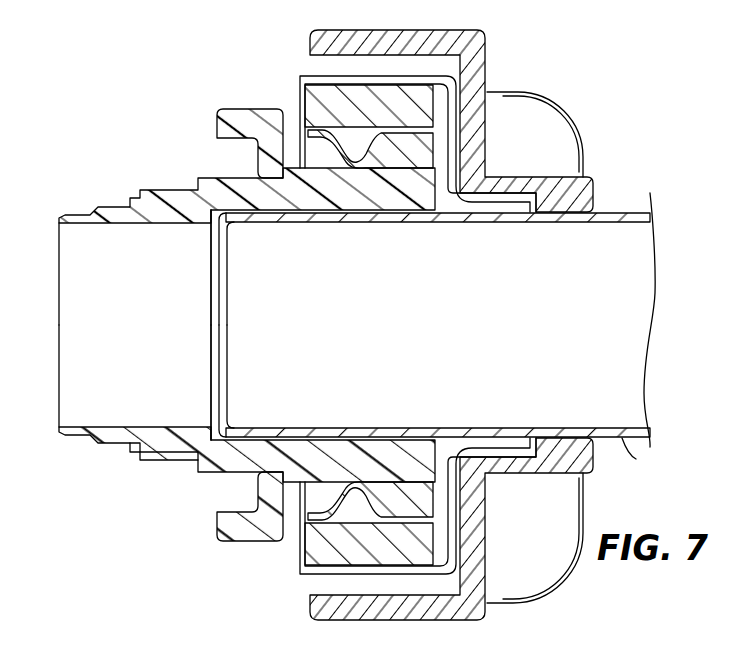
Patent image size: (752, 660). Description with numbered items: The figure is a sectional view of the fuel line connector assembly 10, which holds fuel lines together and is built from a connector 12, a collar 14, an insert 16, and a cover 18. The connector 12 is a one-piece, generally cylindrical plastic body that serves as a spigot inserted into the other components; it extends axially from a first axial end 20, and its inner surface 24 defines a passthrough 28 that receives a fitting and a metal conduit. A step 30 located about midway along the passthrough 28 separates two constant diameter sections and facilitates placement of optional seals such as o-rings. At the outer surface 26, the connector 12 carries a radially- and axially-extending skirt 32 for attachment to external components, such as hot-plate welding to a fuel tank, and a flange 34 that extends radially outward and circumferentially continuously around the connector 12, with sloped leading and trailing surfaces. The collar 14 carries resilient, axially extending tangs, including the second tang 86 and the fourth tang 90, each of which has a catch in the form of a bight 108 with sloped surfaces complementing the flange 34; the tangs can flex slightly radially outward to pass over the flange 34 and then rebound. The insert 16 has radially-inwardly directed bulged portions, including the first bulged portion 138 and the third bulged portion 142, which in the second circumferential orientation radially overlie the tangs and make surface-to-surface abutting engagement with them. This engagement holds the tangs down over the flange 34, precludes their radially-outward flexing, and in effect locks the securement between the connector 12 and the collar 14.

The fuel line connector assembly 10 is at (528, 60).
The connector 12 is at (230, 545).
The collar 14 is at (308, 512).
The insert 16 is at (300, 548).
The cover 18 is at (423, 622).
The first axial end 20 is at (59, 285).
The inner surface 24 is at (143, 340).
The outer surface 26 is at (153, 463).
The passthrough 28 is at (150, 427).
The step 30 is at (211, 226).
The skirt 32 is at (238, 108).
The flange 34 is at (368, 146).
The second tang 86 is at (303, 132).
The fourth tang 90 is at (305, 517).
The bight 108 is at (352, 163).
The first bulged portion 138 is at (363, 121).
The third bulged portion 142 is at (373, 527).